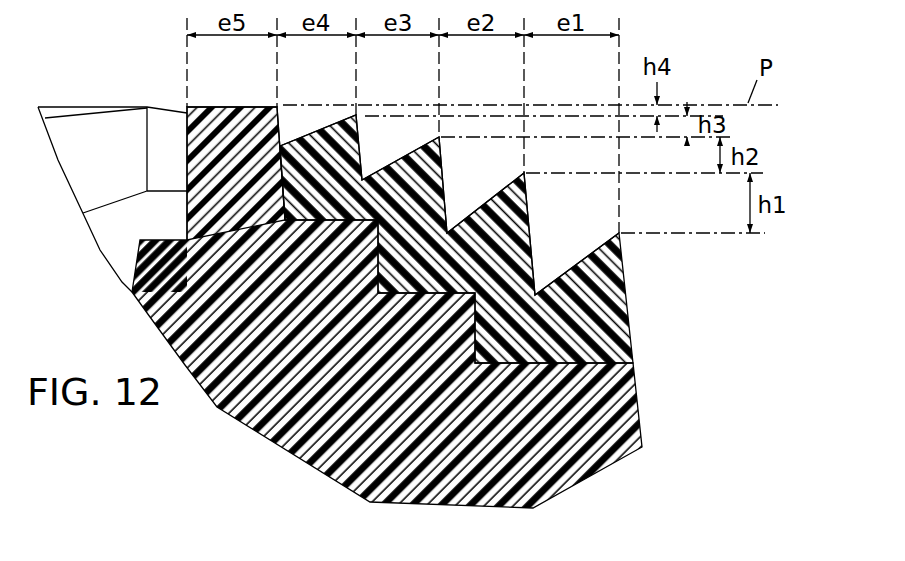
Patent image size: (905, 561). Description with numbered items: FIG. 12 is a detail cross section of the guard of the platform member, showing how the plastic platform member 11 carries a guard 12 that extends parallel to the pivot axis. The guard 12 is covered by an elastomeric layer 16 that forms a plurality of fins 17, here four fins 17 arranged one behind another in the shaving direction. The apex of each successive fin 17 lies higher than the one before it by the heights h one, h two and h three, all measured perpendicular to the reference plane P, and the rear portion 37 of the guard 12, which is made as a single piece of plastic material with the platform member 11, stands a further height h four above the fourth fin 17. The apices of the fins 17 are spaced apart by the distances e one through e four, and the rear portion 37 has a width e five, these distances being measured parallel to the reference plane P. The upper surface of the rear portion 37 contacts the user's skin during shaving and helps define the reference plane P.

The platform member 11 is at (646, 452).
The guard 12 is at (625, 398).
The elastomeric layer 16 is at (615, 308).
The fins 17 is at (619, 233).
The rear portion of the guard 37 is at (222, 105).